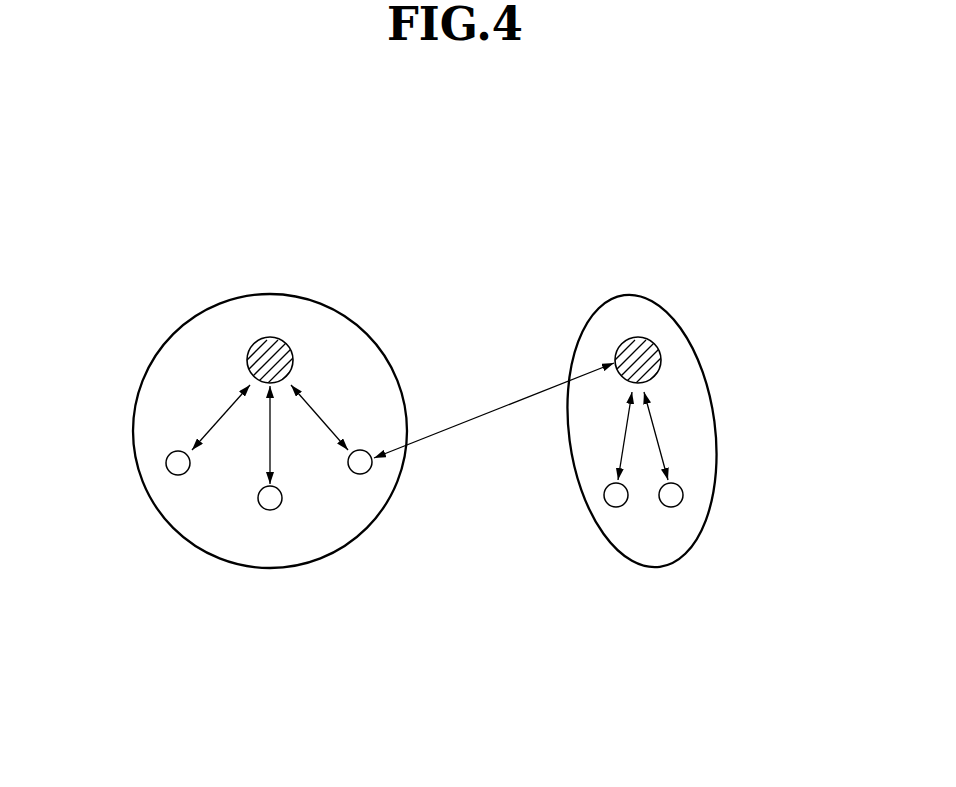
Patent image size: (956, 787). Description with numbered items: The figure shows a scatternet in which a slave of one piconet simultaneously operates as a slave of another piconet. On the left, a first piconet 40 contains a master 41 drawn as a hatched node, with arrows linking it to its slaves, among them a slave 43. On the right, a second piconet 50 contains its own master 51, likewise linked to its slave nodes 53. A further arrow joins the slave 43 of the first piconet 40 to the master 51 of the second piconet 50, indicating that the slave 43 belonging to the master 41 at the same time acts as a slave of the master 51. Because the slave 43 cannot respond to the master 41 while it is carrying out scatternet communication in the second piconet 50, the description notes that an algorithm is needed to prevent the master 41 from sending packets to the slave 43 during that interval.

The first piconet 40 is at (264, 569).
The master 41 is at (271, 337).
The slave 43 is at (168, 472).
The second piconet 50 is at (662, 556).
The master 51 is at (648, 337).
The slave nodes of second cluster 53 is at (683, 488).